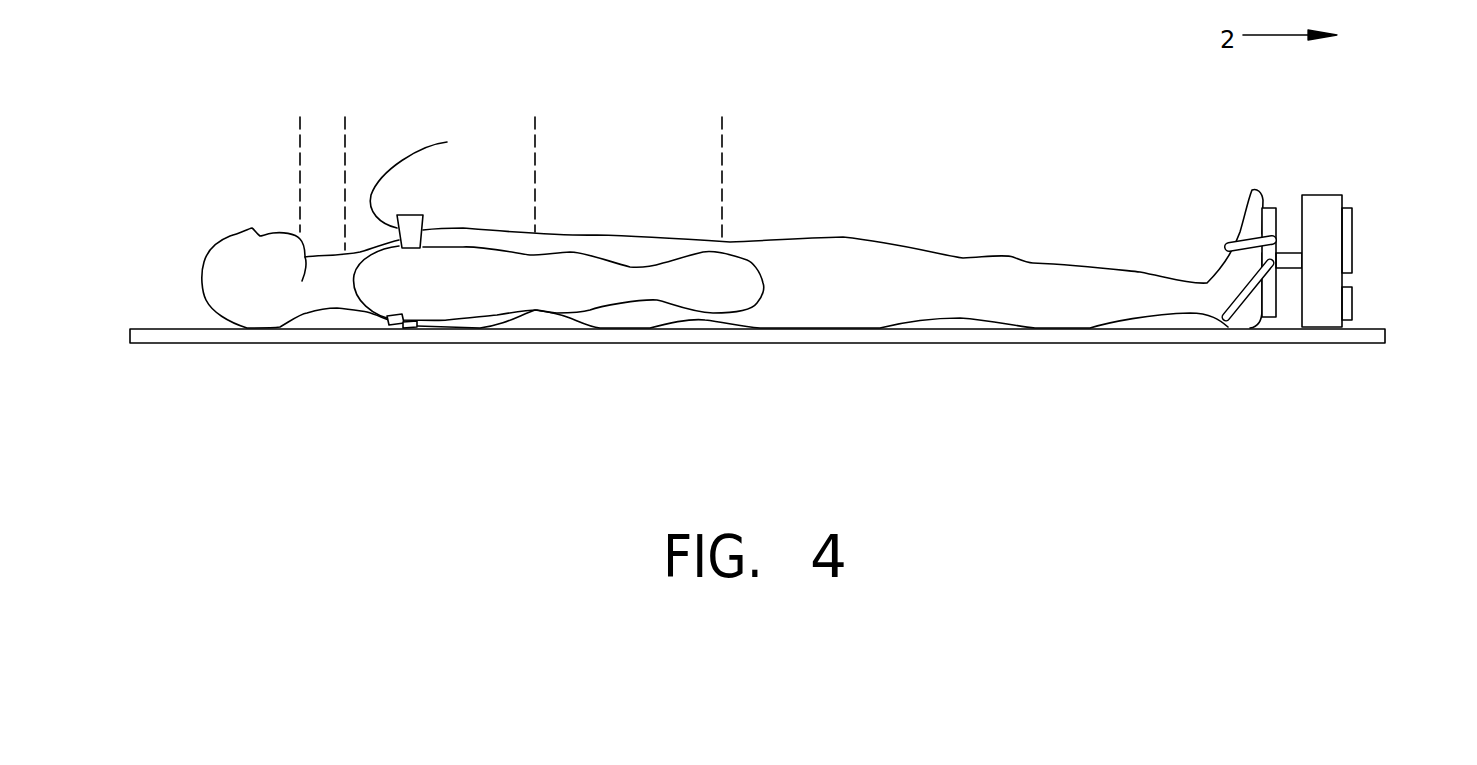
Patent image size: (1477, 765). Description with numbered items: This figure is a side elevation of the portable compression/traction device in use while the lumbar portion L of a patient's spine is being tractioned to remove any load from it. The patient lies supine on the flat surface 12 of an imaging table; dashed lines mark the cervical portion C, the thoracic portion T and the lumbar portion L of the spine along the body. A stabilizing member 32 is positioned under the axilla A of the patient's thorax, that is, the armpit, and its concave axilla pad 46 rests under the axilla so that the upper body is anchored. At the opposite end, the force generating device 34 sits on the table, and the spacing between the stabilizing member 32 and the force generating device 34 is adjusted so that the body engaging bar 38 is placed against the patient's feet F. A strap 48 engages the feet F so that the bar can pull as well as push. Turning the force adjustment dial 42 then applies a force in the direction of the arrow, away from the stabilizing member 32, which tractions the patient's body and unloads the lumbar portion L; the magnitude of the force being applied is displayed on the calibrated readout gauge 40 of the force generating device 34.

The flat surface 12 is at (1118, 343).
The stabilizing member 32 is at (410, 215).
The force generating device 34 is at (1322, 195).
The body engaging bar 38 is at (1275, 208).
The calibrated readout gauge 40 is at (1353, 237).
The force adjustment dial 42 is at (1353, 300).
The concave axilla pad 46 is at (425, 178).
The strap 48 is at (1223, 238).
The axilla A is at (387, 325).
The feet F is at (1248, 207).
The cervical portion C is at (322, 165).
The thoracic portion T is at (482, 156).
The lumbar portion L is at (670, 160).